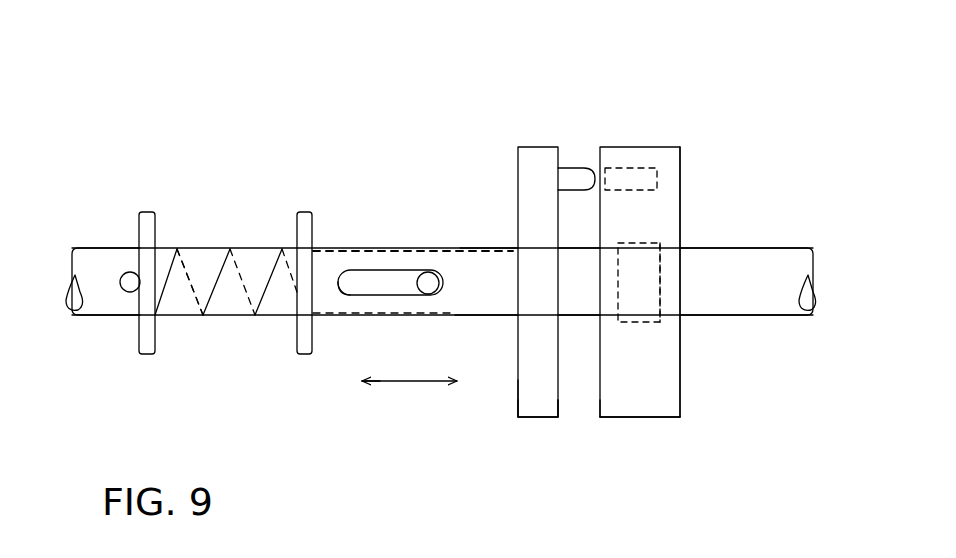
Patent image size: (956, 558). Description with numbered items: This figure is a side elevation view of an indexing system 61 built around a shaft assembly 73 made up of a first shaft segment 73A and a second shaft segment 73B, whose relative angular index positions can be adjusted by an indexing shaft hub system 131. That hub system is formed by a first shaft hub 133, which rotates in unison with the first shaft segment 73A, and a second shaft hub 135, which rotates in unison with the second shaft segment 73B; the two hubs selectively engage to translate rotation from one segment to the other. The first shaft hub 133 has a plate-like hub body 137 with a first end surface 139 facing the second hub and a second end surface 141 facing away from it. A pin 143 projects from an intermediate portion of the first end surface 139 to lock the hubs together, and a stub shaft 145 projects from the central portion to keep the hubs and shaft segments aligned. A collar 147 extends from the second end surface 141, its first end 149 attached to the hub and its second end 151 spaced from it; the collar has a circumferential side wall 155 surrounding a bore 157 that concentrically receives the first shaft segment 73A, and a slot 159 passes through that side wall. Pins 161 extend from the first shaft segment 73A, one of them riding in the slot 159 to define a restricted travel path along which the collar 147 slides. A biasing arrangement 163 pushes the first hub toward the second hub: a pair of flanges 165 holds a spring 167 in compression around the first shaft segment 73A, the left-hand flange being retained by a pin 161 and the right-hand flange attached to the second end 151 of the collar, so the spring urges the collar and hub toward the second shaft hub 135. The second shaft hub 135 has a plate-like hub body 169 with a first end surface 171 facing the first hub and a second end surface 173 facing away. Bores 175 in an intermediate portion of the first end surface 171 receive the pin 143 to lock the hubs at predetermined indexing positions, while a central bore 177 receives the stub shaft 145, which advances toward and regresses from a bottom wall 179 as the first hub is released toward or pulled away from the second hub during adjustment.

The indexing system 61 is at (501, 45).
The shaft assembly 73 is at (62, 296).
The first shaft segment 73A is at (88, 246).
The second shaft segment 73B is at (781, 246).
The indexing shaft hub system 131 is at (414, 148).
The first shaft hub 133 is at (531, 437).
The second shaft hub 135 is at (661, 437).
The hub body 137 is at (533, 146).
The first end surface 139 is at (561, 418).
The second end surface 141 is at (518, 396).
The pin 143 is at (578, 163).
The stub shaft 145 is at (583, 318).
The collar 147 is at (378, 246).
The first end 149 is at (511, 246).
The second end 151 is at (321, 247).
The circumferential side wall 155 is at (466, 264).
The bore 157 is at (400, 247).
The slot 159 is at (348, 297).
The pins 161 is at (130, 271).
The biasing arrangement 163 is at (227, 196).
The flanges 165 is at (141, 356).
The spring 167 is at (203, 318).
The hub body 169 is at (631, 146).
The first end surface 171 is at (599, 418).
The second end surface 173 is at (682, 384).
The bores 175 is at (657, 181).
The central bore 177 is at (640, 324).
The bottom wall 179 is at (660, 256).